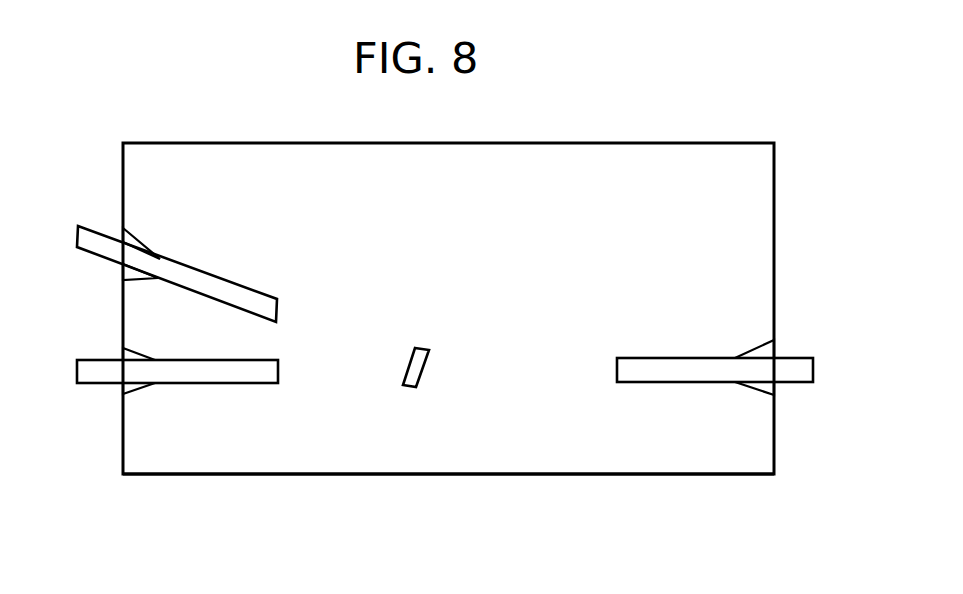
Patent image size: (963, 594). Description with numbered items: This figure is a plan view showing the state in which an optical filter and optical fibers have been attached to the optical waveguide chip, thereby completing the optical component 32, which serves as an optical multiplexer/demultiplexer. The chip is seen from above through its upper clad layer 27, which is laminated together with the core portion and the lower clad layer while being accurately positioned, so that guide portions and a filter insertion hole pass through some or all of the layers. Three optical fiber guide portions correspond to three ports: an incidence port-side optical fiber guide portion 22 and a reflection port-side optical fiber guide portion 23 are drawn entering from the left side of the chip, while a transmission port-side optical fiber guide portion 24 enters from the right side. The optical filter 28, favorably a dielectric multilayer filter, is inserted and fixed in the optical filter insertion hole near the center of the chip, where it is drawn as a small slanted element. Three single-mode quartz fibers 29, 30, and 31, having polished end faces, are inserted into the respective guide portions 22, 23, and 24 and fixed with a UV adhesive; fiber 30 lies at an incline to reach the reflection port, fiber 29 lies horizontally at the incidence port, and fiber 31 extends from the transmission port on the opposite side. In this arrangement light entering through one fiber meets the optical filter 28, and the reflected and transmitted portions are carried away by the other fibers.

The incidence port-side optical fiber guide portion 22 is at (120, 388).
The reflection port-side optical fiber guide portion 23 is at (124, 236).
The transmission port-side optical fiber guide portion 24 is at (768, 346).
The upper clad layer 27 is at (480, 450).
The optical filter 28 is at (422, 346).
The single-mode quartz fiber 29 is at (79, 372).
The single-mode quartz fiber 30 is at (94, 250).
The single-mode quartz fiber 31 is at (793, 370).
The optical component 32 is at (586, 490).